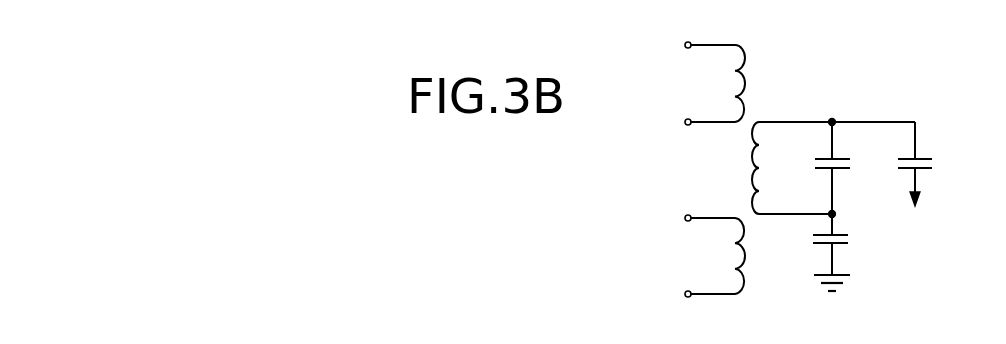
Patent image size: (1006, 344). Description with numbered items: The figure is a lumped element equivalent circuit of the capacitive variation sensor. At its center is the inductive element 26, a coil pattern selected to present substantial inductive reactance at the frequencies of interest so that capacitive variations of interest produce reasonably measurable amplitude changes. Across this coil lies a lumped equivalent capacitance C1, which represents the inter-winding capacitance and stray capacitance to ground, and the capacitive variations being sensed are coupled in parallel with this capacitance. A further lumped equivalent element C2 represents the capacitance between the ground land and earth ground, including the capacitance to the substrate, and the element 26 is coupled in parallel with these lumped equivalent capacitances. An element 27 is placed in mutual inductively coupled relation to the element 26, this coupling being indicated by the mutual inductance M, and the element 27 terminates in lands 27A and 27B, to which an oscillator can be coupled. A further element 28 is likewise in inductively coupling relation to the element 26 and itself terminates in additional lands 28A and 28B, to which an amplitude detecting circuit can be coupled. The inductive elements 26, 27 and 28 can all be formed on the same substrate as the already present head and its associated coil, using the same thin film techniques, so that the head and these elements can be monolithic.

The element 26 is at (757, 185).
The element 27 is at (745, 270).
The land 27A is at (666, 219).
The land 27B is at (666, 295).
The element 28 is at (742, 78).
The land 28A is at (666, 45).
The land 28B is at (666, 122).
The lumped equivalent capacitance C1 is at (841, 168).
The lumped equivalent element C2 is at (842, 252).
The mutual coupling M is at (731, 181).